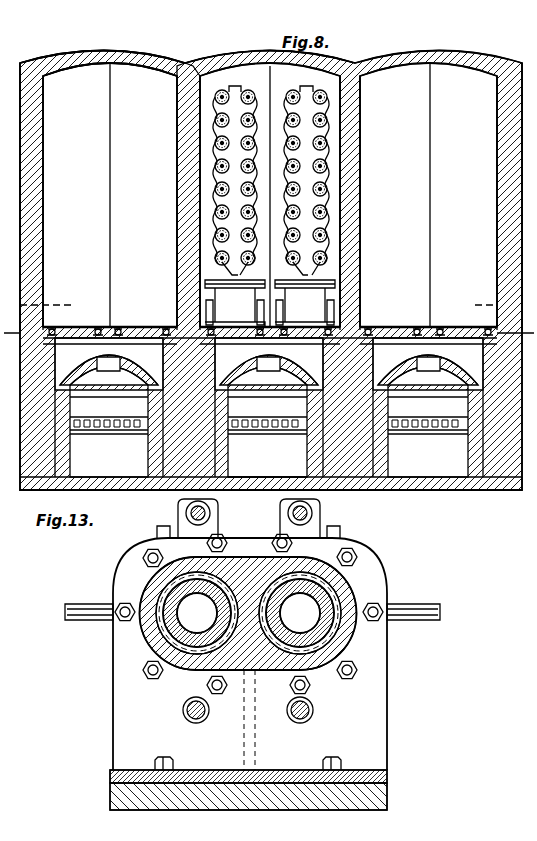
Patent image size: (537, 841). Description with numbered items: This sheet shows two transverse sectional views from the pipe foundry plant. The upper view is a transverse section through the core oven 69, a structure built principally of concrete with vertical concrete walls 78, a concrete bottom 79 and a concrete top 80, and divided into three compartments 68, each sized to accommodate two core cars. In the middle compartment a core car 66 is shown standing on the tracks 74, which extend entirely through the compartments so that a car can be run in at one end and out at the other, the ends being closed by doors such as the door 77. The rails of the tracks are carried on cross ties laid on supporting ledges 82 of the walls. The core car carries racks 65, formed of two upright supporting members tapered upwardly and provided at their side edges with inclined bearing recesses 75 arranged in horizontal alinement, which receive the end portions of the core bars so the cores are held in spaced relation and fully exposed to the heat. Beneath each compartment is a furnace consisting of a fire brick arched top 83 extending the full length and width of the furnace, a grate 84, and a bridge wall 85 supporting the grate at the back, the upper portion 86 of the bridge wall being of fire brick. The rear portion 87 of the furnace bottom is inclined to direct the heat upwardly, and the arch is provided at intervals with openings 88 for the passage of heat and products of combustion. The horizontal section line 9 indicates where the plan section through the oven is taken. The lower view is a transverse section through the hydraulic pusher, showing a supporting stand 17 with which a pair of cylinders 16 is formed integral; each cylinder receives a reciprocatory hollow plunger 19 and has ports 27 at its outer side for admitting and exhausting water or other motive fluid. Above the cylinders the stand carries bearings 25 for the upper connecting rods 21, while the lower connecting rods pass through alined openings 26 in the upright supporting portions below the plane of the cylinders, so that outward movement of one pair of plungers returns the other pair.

In FIG. 8, the door 77 is at (116, 80).
In FIG. 8, the core oven 69 is at (190, 56).
In FIG. 8, the concrete top 80 is at (252, 58).
In FIG. 8, the compartments 68 is at (112, 72).
In FIG. 8, the vertical concrete walls 78 is at (497, 212).
In FIG. 8, the racks 65 is at (232, 152).
In FIG. 8, the inclined bearing recesses 75 is at (271, 271).
In FIG. 8, the core car 66 is at (200, 278).
In FIG. 8, the section line 9 is at (268, 315).
In FIG. 8, the supporting ledges 82 is at (58, 338).
In FIG. 8, the tracks 74 is at (420, 334).
In FIG. 8, the rear portion of furnace bottom 87 is at (130, 338).
In FIG. 8, the arched top 83 is at (269, 377).
In FIG. 8, the openings 88 is at (113, 372).
In FIG. 8, the upper portion of bridge wall 86 is at (269, 408).
In FIG. 8, the grate 84 is at (112, 435).
In FIG. 8, the concrete bottom 79 is at (263, 483).
In FIG. 8, the bridge wall 85 is at (438, 480).
In FIG. 13, the supporting stand 17 is at (196, 768).
In FIG. 13, the cylinders 16 is at (158, 640).
In FIG. 13, the plungers 19 is at (248, 613).
In FIG. 13, the ports 27 is at (86, 621).
In FIG. 13, the bearings 25 is at (210, 502).
In FIG. 13, the longitudinal rods 21 is at (218, 518).
In FIG. 13, the alined openings 26 is at (288, 716).